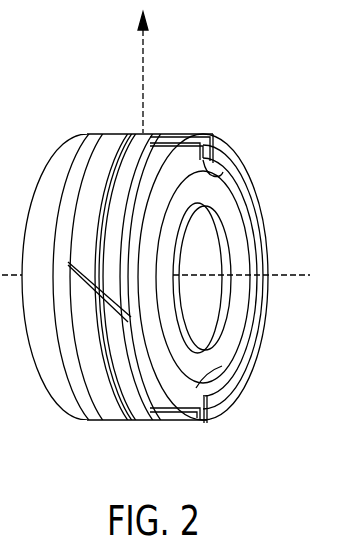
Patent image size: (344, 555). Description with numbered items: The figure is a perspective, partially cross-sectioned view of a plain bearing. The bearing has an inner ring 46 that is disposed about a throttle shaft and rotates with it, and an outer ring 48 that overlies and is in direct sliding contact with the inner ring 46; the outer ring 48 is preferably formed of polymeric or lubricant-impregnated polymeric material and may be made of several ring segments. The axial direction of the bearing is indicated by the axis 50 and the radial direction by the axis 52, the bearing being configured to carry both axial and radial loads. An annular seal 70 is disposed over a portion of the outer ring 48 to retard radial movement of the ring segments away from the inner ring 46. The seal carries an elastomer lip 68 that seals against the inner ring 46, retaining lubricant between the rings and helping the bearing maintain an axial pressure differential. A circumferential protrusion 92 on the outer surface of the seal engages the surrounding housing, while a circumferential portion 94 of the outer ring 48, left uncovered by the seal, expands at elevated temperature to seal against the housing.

The inner ring 46 is at (207, 365).
The outer ring 48 is at (123, 421).
The axis 50 is at (284, 273).
The axis 52 is at (148, 56).
The lip 68 is at (222, 173).
The annular seal 70 is at (212, 148).
The protrusion 92 is at (118, 132).
The circumferential portion 94 is at (133, 132).